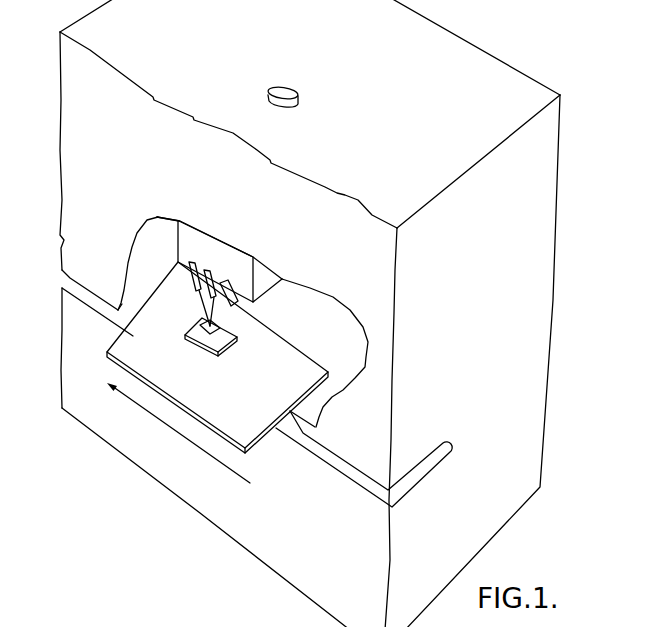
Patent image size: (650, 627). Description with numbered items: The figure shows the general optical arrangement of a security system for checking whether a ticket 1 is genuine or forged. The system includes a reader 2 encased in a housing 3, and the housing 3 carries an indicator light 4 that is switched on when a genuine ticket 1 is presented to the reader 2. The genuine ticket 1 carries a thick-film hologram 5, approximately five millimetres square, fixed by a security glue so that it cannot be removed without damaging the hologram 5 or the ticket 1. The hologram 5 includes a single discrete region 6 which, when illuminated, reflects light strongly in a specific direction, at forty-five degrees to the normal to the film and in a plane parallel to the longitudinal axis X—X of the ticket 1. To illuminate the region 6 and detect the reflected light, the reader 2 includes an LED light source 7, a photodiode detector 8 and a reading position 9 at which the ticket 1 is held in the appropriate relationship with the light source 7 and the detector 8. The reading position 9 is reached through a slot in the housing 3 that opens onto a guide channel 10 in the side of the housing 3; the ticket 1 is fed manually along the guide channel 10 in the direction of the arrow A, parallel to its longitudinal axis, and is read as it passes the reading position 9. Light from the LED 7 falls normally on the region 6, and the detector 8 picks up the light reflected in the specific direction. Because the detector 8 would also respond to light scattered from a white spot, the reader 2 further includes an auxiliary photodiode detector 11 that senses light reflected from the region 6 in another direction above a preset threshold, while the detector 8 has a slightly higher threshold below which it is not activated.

The ticket 1 is at (184, 374).
The reader 2 is at (150, 257).
The housing 3 is at (65, 152).
The indicator light 4 is at (268, 93).
The thick-film hologram 5 is at (223, 358).
The discrete region 6 is at (229, 344).
The LED light source 7 is at (219, 282).
The photodiode detector 8 is at (198, 290).
The reading position 9 is at (262, 450).
The guide channel 10 is at (357, 487).
The auxiliary photodiode detector 11 is at (238, 303).
The longitudinal axis X is at (122, 305).
The feed direction arrow A is at (178, 433).